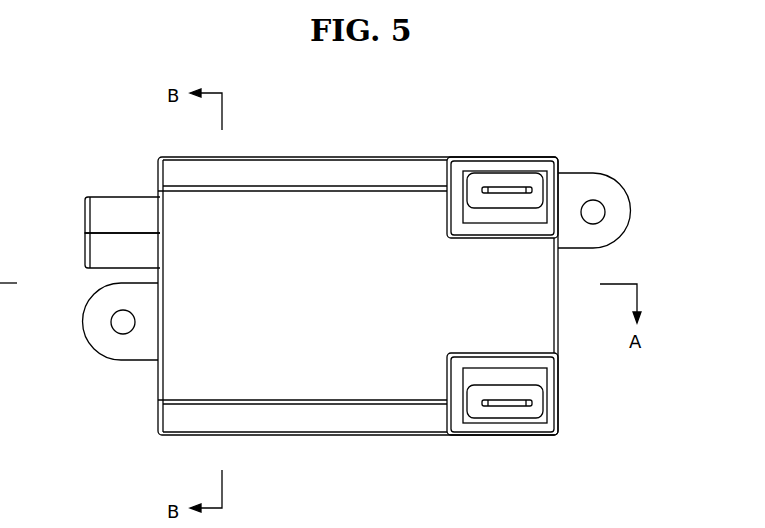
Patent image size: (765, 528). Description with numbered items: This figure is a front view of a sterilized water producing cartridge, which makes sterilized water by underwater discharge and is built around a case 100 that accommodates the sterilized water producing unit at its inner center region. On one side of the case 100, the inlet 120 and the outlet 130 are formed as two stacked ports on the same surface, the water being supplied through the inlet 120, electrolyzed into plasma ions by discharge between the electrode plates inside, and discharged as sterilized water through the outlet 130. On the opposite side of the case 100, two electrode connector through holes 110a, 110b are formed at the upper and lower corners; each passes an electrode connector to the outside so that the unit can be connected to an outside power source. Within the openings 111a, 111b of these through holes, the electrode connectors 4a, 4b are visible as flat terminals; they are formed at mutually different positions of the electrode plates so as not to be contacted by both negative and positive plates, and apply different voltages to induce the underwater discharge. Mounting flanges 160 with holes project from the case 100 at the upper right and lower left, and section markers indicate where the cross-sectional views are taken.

The case 100 is at (308, 218).
The electrode connector through hole 110a is at (478, 215).
The electrode connector through hole 110b is at (482, 377).
The first terminal opening 111a is at (537, 178).
The second terminal opening 111b is at (537, 397).
The electrode connector 4a is at (505, 188).
The electrode connector 4b is at (515, 406).
The inlet 120 is at (95, 250).
The outlet 130 is at (100, 207).
The mounting flange 160 is at (107, 345).